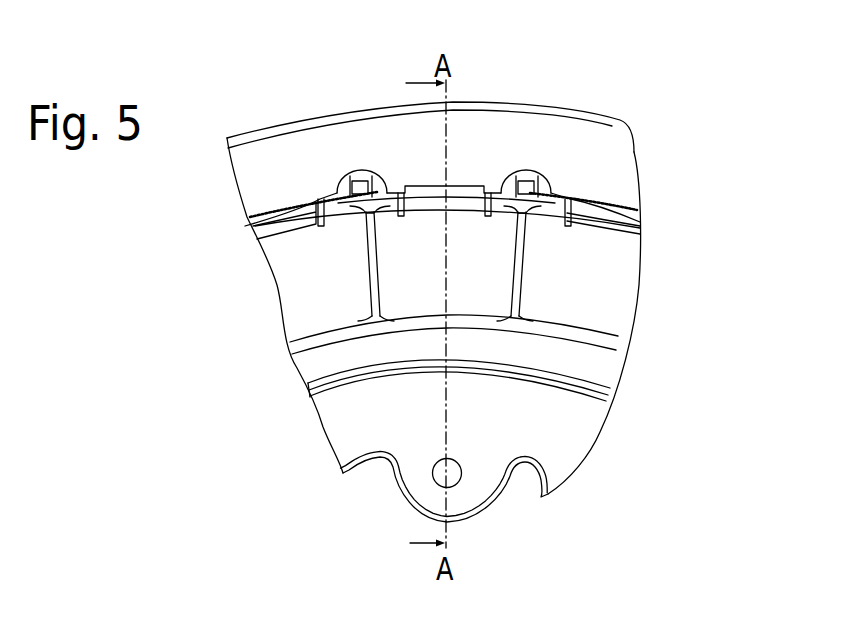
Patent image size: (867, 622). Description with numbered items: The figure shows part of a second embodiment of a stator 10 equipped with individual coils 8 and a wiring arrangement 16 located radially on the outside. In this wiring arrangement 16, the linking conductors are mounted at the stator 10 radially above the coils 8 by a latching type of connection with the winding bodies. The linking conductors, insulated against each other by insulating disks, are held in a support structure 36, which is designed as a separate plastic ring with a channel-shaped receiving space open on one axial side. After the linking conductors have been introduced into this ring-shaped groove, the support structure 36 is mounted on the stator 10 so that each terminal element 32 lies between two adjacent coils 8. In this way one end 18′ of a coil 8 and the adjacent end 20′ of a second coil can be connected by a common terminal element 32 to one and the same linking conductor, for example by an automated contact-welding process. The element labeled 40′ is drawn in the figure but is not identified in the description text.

The coil 8 is at (358, 213).
The stator 10 is at (249, 428).
The wiring arrangement 16 is at (249, 103).
The coil end 18′ is at (330, 307).
The coil end 20′ is at (300, 238).
The terminal element 32 is at (357, 177).
The support structure 36 is at (607, 120).
The clip 40′ is at (336, 190).